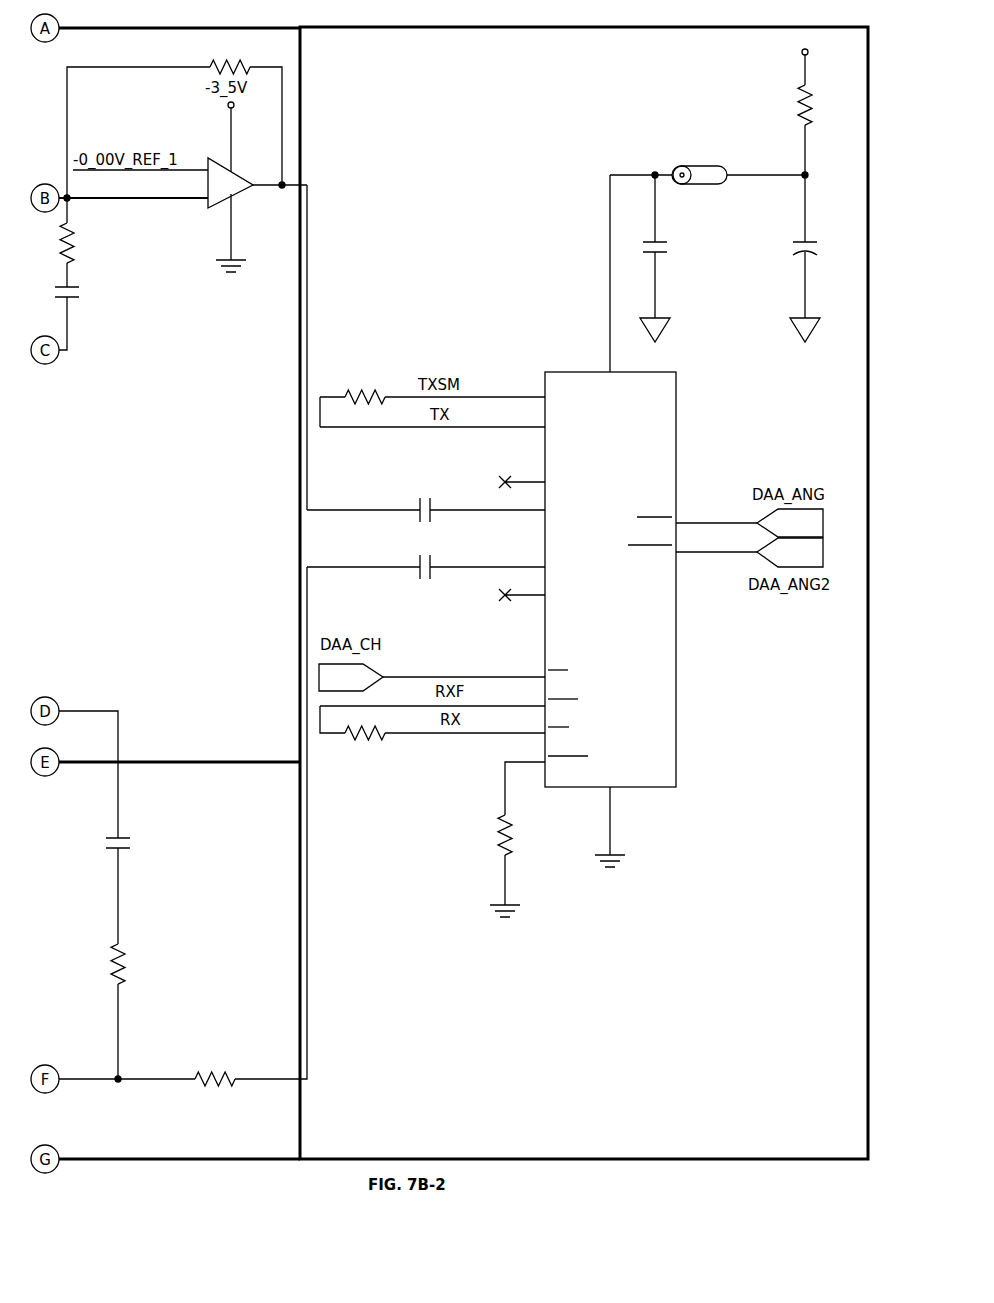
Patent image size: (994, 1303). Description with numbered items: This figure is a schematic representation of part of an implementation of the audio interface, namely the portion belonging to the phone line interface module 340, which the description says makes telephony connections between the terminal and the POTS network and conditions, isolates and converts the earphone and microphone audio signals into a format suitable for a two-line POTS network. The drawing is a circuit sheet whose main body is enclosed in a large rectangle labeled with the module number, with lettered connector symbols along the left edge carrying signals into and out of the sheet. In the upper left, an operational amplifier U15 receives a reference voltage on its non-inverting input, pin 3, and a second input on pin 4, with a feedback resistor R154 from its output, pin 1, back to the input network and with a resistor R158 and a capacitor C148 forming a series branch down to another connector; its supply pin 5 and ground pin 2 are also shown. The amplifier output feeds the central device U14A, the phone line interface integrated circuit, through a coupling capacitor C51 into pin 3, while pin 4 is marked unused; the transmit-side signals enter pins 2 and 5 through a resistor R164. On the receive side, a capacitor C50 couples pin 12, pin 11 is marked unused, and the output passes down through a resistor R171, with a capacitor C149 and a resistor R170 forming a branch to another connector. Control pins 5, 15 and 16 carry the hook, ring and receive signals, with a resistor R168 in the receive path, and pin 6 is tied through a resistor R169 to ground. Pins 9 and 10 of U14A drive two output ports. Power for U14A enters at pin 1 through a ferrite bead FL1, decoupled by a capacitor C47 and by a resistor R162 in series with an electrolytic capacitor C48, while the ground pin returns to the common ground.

The phone line interface module 340 is at (718, 1012).
The pin 1 is at (529, 260).
The pin 2 is at (510, 273).
The pin 3 is at (309, 331).
The pin 4 is at (347, 333).
The pin 5 is at (386, 389).
The pin 6 is at (525, 777).
The pin 9 is at (749, 521).
The pin 10 is at (749, 550).
The pin 11 is at (522, 588).
The pin 12 is at (426, 556).
The pin 15 is at (432, 695).
The pin 16 is at (465, 722).
The resistor R154 10K R154 is at (227, 58).
The resistor R158 10K R158 is at (89, 244).
The capacitor C148 0.1uF C148 is at (92, 305).
The operational amplifier U15 AD5545 U15 is at (261, 165).
The resistor R164 10.0K R164 is at (367, 375).
The capacitor C51 0.1uF C51 is at (421, 499).
The capacitor C50 0.1uF C50 is at (421, 582).
The DAA codec U14A is at (630, 581).
The resistor R168 130K R168 is at (365, 758).
The resistor R169 10K R169 is at (481, 834).
The ferrite bead FL1 is at (670, 129).
The capacitor C47 1uF C47 is at (674, 258).
The resistor R162 10 ohm R162 is at (822, 103).
The capacitor C48 10uF C48 is at (825, 275).
The capacitor C149 0.1uF C149 is at (140, 844).
The resistor R170 10K R170 is at (140, 964).
The resistor R171 10K R171 is at (215, 1058).